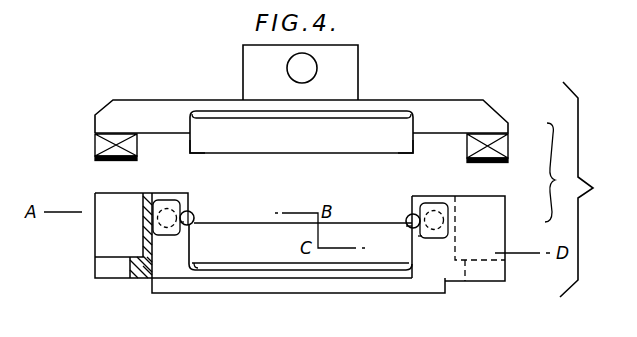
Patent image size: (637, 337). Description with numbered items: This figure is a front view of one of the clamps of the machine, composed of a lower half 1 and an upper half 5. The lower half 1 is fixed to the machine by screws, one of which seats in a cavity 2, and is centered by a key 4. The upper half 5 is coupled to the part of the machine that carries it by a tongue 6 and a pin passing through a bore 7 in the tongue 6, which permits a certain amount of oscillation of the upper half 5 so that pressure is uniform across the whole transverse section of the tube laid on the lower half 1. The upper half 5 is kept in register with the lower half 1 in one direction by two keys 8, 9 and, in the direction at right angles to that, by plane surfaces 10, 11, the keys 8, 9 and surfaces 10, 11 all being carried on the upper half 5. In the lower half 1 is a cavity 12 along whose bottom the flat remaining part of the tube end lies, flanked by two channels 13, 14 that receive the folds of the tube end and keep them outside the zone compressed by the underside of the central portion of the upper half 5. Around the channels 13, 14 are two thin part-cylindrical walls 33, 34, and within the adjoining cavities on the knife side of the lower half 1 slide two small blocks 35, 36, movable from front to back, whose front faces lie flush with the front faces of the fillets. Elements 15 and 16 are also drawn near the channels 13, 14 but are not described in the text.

The lower half 1 is at (447, 284).
The cavity 2 is at (103, 272).
The key 4 is at (378, 284).
The upper half 5 is at (485, 113).
The tongue 6 is at (348, 73).
The bore 7 is at (308, 64).
The key 8 is at (137, 146).
The key 9 is at (495, 148).
The plane surface 10 is at (190, 151).
The plane surface 11 is at (414, 151).
The cavity 12 is at (304, 114).
The channel 13 is at (190, 226).
The channel 14 is at (408, 226).
The right pin 15 is at (411, 217).
The left pin 16 is at (194, 215).
The part-cylindrical wall 33 is at (184, 230).
The part-cylindrical wall 34 is at (420, 237).
The small block 35 is at (180, 205).
The small block 36 is at (423, 203).